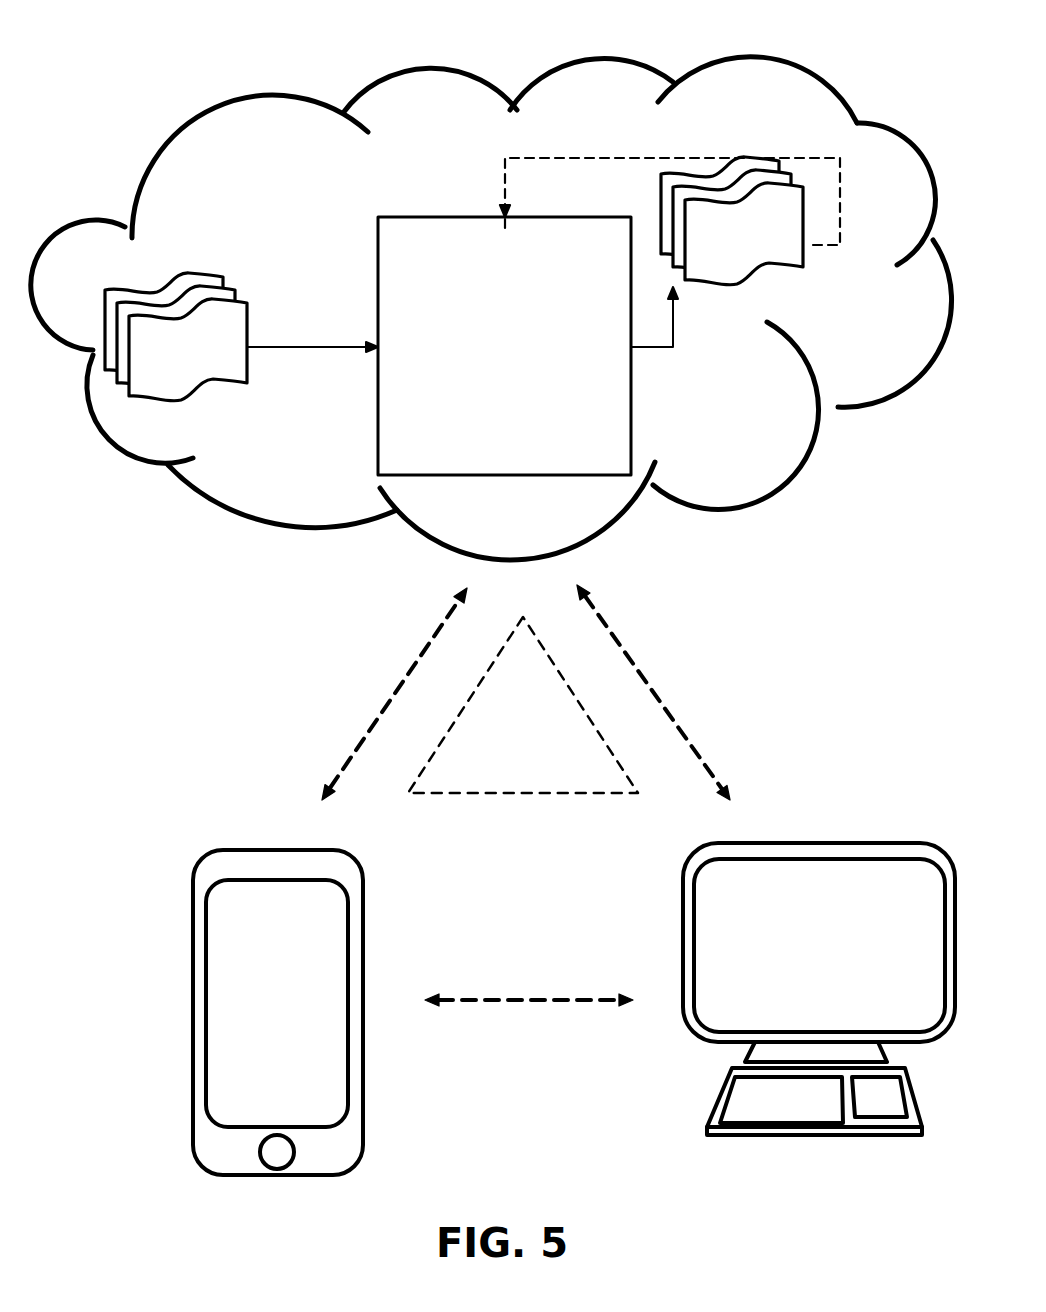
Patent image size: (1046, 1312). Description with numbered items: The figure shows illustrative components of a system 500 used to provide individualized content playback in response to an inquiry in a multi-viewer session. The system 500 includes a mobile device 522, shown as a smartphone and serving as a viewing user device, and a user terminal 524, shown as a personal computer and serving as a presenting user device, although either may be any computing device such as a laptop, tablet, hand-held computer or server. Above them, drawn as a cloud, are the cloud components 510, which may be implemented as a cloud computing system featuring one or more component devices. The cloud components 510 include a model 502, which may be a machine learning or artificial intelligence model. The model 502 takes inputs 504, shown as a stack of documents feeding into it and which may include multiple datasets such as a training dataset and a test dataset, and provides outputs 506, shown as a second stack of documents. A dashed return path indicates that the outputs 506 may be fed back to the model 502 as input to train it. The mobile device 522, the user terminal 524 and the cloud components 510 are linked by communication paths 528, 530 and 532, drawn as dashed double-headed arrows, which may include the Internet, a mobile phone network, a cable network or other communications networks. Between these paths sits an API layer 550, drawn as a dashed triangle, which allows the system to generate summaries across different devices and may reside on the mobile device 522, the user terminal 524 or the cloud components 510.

The system 500 is at (480, 54).
The model 502 is at (485, 358).
The inputs 504 is at (198, 272).
The outputs 506 is at (791, 281).
The cloud components 510 is at (803, 108).
The mobile device 522 is at (266, 818).
The user terminal 524 is at (813, 820).
The communication path 528 is at (350, 675).
The communication path 530 is at (735, 638).
The communication path 532 is at (521, 960).
The API layer 550 is at (505, 730).